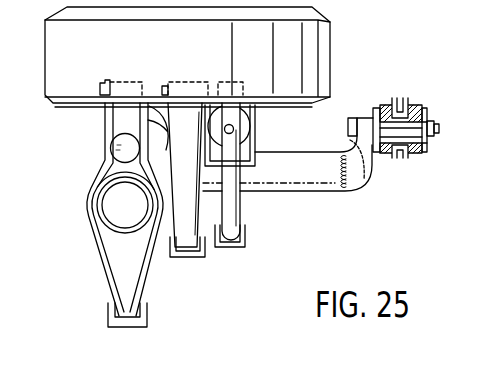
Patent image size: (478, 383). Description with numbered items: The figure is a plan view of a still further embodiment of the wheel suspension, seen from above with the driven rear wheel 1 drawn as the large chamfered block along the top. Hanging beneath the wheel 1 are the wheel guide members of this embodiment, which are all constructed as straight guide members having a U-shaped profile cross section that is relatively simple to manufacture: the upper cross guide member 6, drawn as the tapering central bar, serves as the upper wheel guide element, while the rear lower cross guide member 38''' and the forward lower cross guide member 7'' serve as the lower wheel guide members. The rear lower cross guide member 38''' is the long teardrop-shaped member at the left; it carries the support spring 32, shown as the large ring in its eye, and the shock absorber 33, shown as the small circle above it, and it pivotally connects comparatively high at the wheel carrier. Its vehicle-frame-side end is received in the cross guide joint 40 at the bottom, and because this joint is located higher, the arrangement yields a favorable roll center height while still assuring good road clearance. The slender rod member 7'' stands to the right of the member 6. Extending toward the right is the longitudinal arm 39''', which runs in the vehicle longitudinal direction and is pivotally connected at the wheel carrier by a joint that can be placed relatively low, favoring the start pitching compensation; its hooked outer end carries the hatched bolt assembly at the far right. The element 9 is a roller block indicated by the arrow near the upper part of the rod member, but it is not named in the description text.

The rear wheel 1 is at (308, 62).
The shock absorber 33 is at (112, 152).
The support spring 32 is at (102, 212).
The rear lower cross guide member 38''' is at (110, 209).
The cross guide joint 40 is at (147, 312).
The upper cross guide member 6 is at (184, 243).
The forward lower cross guide member 7'' is at (248, 183).
The roller block 9 is at (259, 135).
The longitudinal arm 39''' is at (321, 167).